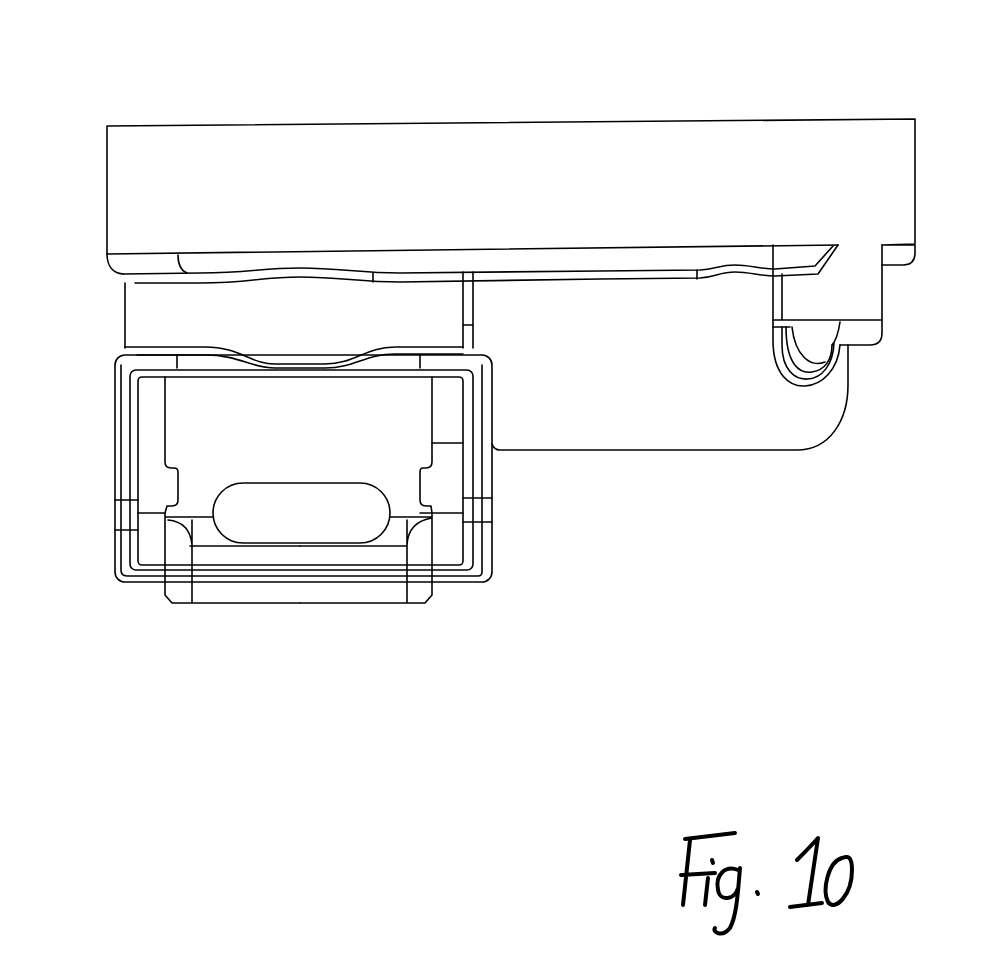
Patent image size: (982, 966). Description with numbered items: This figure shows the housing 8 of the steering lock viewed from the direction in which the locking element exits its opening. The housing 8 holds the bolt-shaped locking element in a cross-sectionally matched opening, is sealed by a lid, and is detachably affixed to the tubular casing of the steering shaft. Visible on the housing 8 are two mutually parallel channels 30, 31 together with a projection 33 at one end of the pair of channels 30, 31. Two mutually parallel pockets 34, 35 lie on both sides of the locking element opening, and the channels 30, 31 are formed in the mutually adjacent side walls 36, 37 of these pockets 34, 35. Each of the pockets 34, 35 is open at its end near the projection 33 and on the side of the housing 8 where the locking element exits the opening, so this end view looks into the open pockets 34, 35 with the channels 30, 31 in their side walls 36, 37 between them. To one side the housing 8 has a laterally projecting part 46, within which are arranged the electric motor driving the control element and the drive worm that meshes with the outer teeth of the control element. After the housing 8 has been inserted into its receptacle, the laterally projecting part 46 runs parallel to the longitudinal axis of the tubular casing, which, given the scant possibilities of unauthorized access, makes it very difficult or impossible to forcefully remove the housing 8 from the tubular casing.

The housing 8 is at (290, 165).
The laterally projecting part 46 is at (713, 420).
The side wall 37 is at (163, 427).
The side wall 36 is at (432, 416).
The channel 31 is at (172, 485).
The channel 30 is at (428, 482).
The pocket 35 is at (150, 540).
The pocket 34 is at (448, 545).
The projection 33 is at (297, 520).